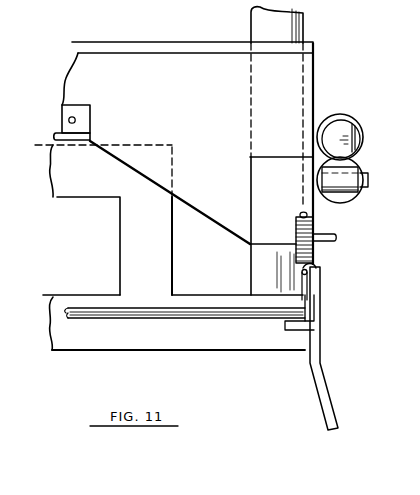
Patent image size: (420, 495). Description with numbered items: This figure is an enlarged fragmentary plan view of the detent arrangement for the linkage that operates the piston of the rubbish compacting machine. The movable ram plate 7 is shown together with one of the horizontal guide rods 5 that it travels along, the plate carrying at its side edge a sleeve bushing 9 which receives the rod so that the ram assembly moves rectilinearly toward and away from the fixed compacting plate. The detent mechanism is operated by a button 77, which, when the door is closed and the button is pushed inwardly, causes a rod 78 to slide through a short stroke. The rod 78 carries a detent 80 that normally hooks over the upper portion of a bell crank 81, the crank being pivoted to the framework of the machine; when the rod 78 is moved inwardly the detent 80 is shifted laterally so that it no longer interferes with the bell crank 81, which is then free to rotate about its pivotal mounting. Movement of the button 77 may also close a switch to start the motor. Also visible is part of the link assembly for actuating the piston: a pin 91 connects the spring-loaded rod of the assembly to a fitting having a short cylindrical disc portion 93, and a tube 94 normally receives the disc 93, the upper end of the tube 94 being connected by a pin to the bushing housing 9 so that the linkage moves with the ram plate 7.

The guide rod 5 is at (294, 26).
The ram plate 7 is at (78, 53).
The sleeve bushing 9 is at (314, 72).
The button 77 is at (313, 283).
The rod 78 is at (158, 308).
The detent 80 is at (312, 312).
The bell crank 81 is at (324, 372).
The pin 91 is at (363, 184).
The disc portion 93 is at (300, 232).
The tube 94 is at (356, 140).